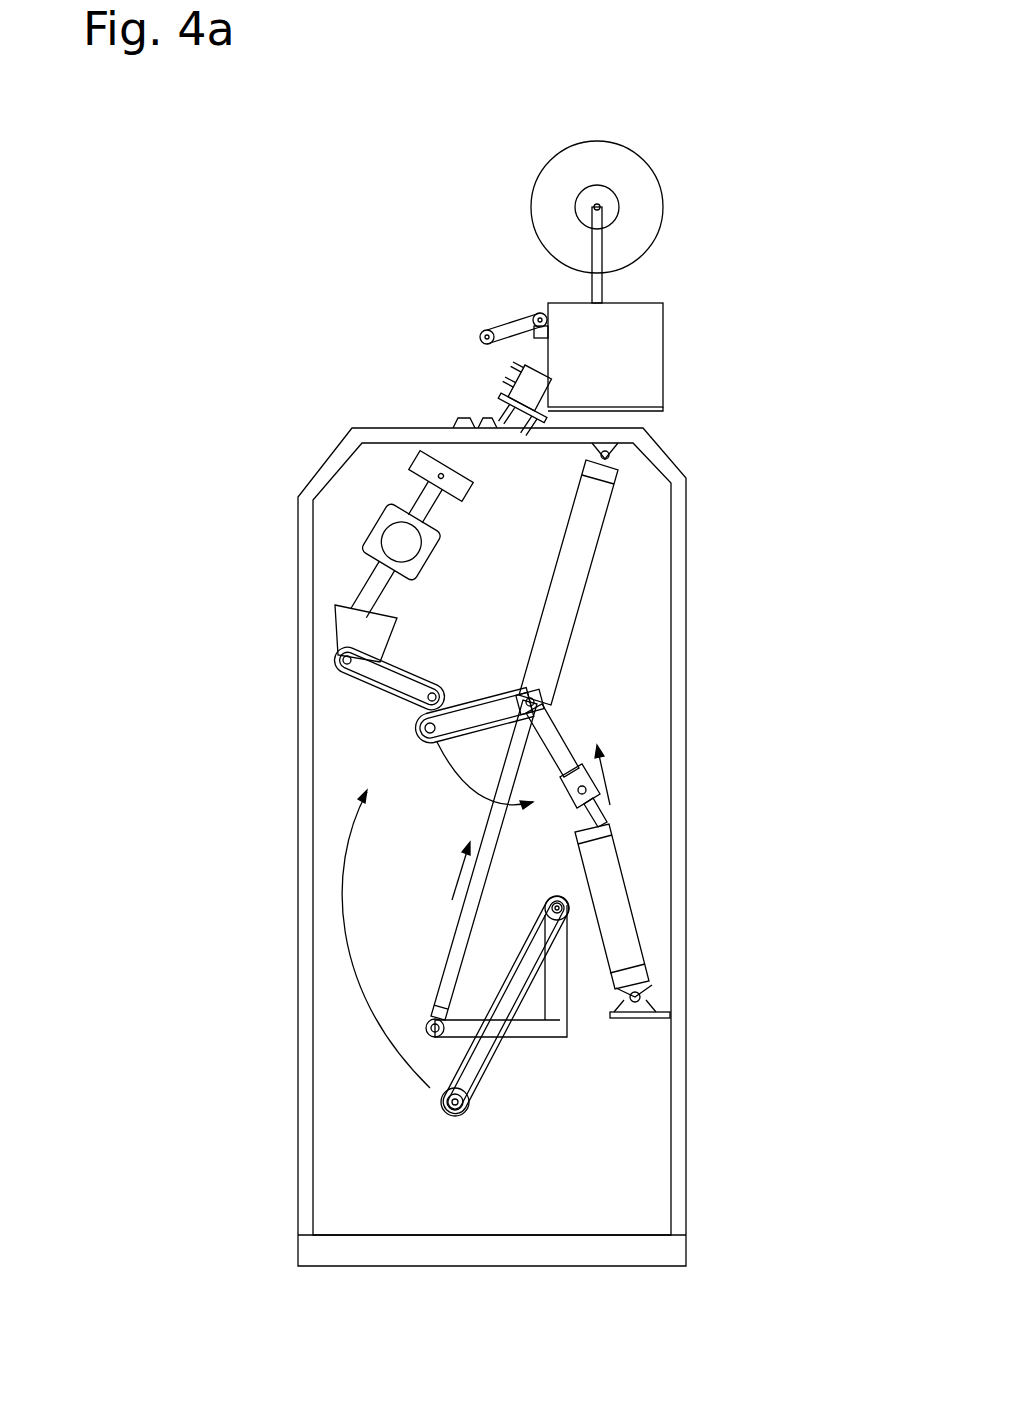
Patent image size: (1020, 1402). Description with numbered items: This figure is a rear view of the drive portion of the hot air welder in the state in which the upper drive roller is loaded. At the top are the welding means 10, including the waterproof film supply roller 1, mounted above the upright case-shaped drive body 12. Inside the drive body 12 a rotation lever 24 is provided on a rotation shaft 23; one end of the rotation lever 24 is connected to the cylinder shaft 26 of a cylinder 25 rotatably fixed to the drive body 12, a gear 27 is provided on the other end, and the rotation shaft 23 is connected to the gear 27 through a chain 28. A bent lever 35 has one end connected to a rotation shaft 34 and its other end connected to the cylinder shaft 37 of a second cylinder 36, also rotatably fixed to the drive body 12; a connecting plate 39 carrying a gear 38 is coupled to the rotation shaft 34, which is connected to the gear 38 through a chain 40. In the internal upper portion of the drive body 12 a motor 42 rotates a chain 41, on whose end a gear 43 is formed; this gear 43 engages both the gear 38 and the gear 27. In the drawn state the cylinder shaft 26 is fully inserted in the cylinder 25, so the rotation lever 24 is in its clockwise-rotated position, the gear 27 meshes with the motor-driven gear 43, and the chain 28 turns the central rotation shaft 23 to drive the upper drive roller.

The waterproof film supply roller 1 is at (650, 208).
The welding means 10 is at (483, 392).
The drive body 12 is at (683, 500).
The motor 42 is at (398, 538).
The chain 41 is at (372, 572).
The gear 43 is at (428, 682).
The gear 27 is at (423, 737).
The chain 28 is at (480, 690).
The cylinder 36 is at (582, 577).
The rotation shaft 23 is at (540, 700).
The rotation lever 24 is at (565, 748).
The cylinder shaft 26 is at (592, 820).
The cylinder 25 is at (640, 952).
The rotation shaft 34 is at (573, 908).
The bent lever 35 is at (537, 1033).
The gear 38 is at (452, 1110).
The chain 40 is at (562, 1027).
The cylinder shaft 37 is at (455, 957).
The connecting plate 39 is at (462, 1053).